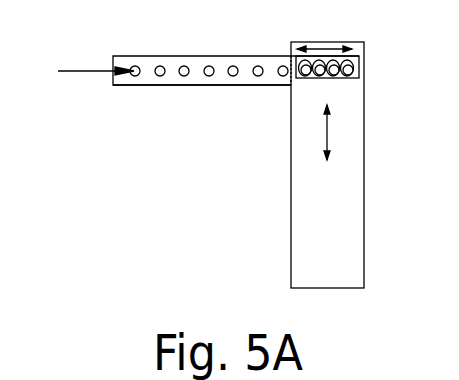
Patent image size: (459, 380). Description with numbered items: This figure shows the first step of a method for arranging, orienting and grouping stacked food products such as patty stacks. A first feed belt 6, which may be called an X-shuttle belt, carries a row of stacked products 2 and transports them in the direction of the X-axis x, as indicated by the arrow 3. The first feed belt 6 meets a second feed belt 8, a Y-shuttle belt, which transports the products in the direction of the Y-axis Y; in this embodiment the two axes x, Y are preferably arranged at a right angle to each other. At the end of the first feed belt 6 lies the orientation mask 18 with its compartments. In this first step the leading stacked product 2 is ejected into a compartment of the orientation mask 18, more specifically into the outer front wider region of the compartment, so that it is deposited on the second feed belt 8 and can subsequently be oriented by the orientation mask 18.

The stacked product 2 is at (184, 78).
The arrow 3 is at (72, 75).
The first feed belt 6 is at (248, 85).
The second feed belt 8 is at (355, 233).
The orientation mask 18 is at (360, 58).
The X-axis x is at (328, 44).
The Y-axis Y is at (330, 134).